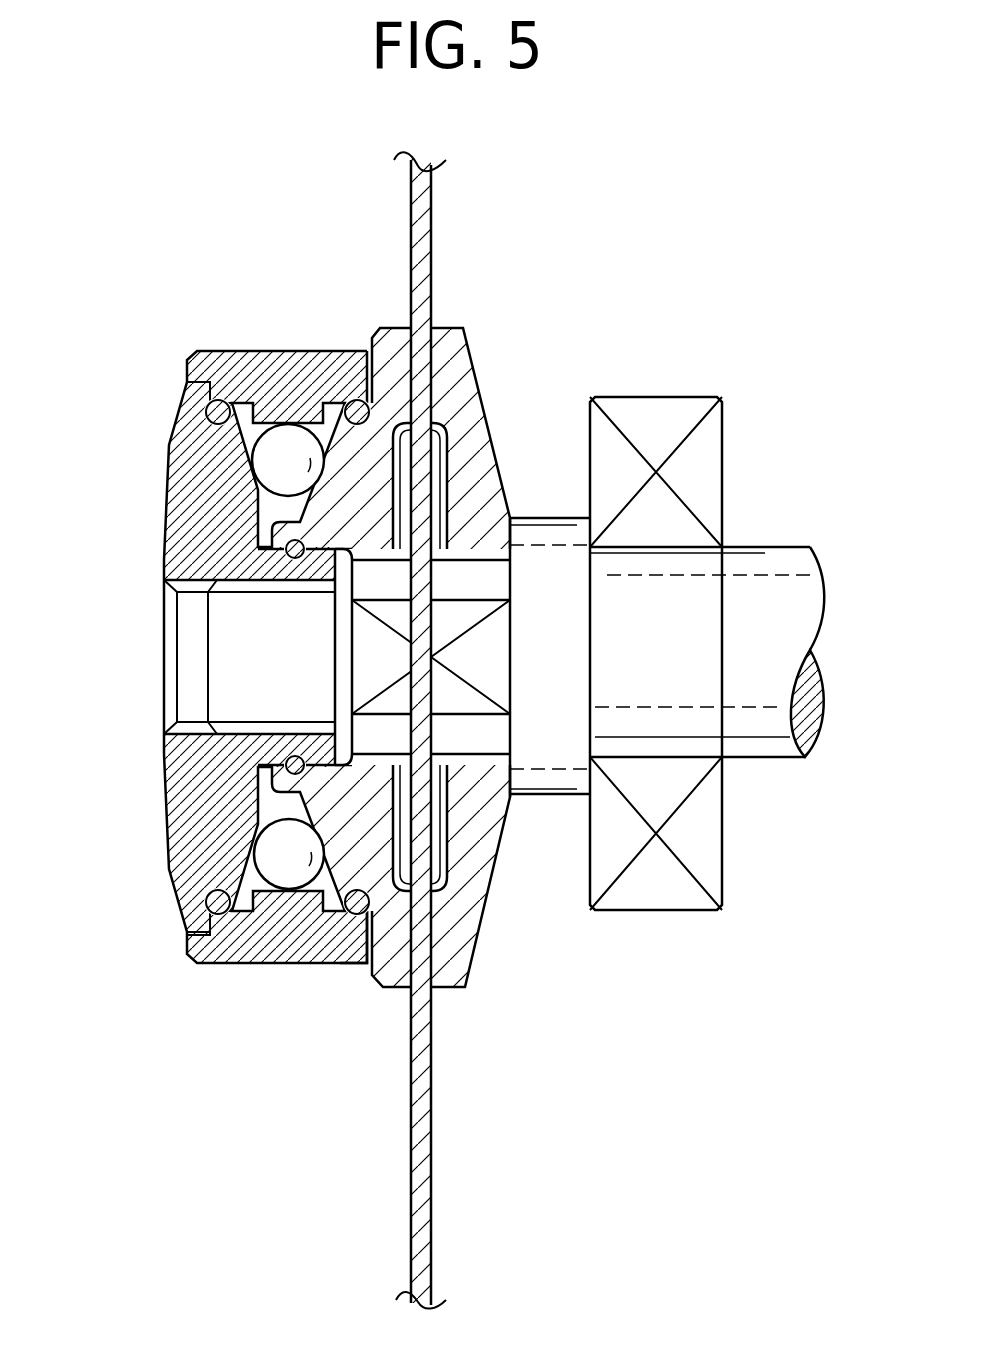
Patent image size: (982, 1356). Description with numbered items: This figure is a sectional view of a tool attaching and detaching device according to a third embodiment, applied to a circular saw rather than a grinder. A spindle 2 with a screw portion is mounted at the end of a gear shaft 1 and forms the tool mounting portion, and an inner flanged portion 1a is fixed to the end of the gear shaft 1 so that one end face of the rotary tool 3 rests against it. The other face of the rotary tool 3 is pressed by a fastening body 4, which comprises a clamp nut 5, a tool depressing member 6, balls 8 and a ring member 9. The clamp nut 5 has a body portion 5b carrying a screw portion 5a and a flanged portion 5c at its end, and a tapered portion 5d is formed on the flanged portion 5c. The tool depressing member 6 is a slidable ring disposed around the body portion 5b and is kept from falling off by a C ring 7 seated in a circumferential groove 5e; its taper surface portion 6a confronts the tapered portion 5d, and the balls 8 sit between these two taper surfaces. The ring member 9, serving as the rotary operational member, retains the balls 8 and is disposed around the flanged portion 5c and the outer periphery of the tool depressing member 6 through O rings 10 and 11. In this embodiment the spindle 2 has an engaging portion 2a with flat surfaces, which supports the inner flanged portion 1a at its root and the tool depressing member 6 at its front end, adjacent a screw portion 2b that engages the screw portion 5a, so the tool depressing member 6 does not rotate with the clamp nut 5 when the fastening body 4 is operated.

The gear shaft 1 is at (772, 567).
The inner flanged portion 1a is at (462, 905).
The spindle 2 is at (237, 673).
The engaging portion 2a is at (460, 568).
The screw portion 2b is at (238, 708).
The rotary tool 3 is at (425, 1065).
The fastening body 4 is at (148, 870).
The clamp nut 5 is at (185, 510).
The screw portion 5a is at (190, 596).
The body portion 5b is at (285, 558).
The flanged portion 5c is at (190, 458).
The tapered portion 5d is at (232, 952).
The circumferential groove 5e is at (312, 893).
The tool depressing member 6 is at (390, 360).
The taper surface portion 6a is at (368, 962).
The C ring 7 is at (283, 762).
The balls 8 is at (290, 440).
The ring member 9 is at (237, 360).
The O ring 10 is at (193, 363).
The O ring 11 is at (348, 395).